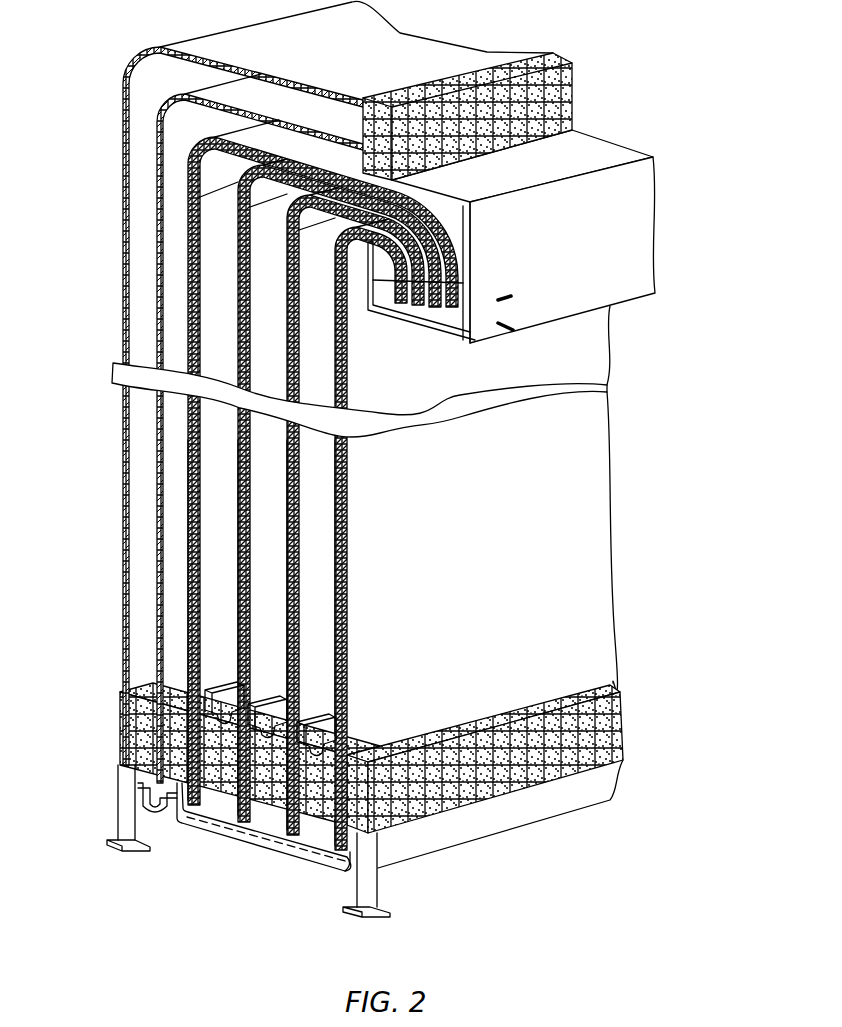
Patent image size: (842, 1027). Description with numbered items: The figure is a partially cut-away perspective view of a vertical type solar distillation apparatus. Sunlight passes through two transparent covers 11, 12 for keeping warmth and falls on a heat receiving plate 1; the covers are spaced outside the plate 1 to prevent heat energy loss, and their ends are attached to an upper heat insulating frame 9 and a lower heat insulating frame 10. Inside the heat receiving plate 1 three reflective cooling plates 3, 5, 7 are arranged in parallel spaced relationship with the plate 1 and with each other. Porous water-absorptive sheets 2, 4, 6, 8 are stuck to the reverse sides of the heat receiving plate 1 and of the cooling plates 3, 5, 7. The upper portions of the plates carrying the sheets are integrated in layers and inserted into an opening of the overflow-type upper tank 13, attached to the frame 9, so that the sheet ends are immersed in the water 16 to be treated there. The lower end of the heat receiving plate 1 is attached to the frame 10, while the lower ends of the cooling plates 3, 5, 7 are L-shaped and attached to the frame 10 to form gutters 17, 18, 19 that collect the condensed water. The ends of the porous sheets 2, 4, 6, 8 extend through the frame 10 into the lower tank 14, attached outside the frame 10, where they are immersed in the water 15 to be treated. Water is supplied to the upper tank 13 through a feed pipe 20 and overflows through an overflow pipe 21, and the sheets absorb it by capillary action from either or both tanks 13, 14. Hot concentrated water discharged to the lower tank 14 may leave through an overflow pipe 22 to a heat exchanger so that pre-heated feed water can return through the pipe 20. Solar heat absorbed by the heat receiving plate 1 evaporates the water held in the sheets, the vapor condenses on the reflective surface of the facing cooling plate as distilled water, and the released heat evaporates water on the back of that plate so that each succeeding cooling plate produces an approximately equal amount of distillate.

The heat receiving plate 1 is at (187, 237).
The porous water-absorptive sheet 2 is at (190, 512).
The reflective cooling plate 3 is at (237, 275).
The porous water-absorptive sheet 4 is at (240, 556).
The reflective cooling plate 5 is at (287, 343).
The porous water-absorptive sheet 6 is at (299, 513).
The reflective cooling plate 7 is at (345, 456).
The porous water-absorptive sheet 8 is at (580, 487).
The heat insulating frame 9 is at (568, 98).
The heat insulating frame 10 is at (140, 727).
The transparent cover 11 is at (123, 120).
The transparent cover 12 is at (157, 179).
The upper tank 13 is at (632, 218).
The lower tank 14 is at (308, 867).
The water to be treated 15 is at (256, 834).
The water to be treated 16 is at (447, 334).
The gutter 17 is at (200, 698).
The gutter 18 is at (287, 710).
The gutter 19 is at (325, 733).
The feed pipe 20 is at (518, 328).
The overflow pipe 21 is at (513, 298).
The overflow pipe 22 is at (170, 808).